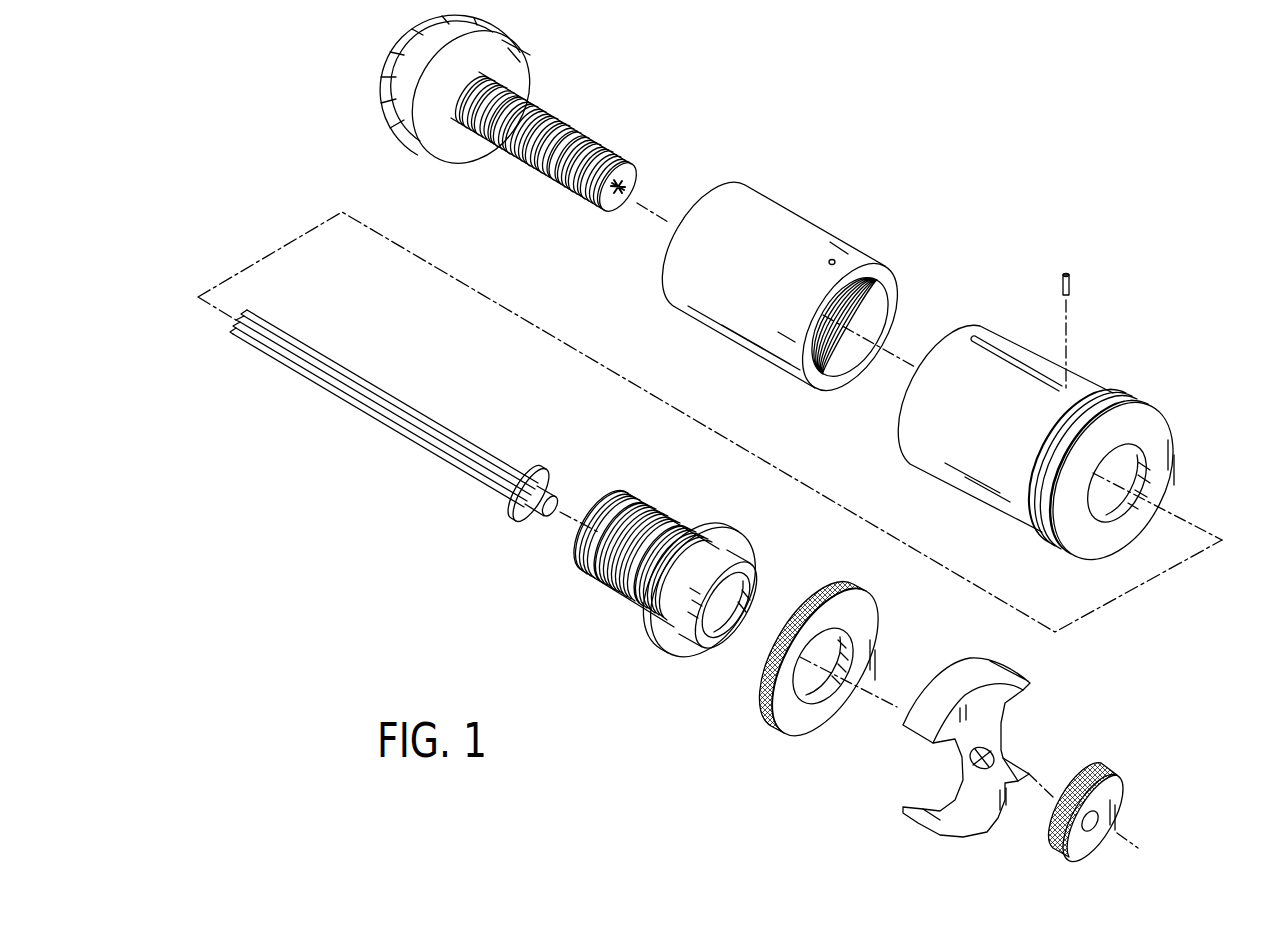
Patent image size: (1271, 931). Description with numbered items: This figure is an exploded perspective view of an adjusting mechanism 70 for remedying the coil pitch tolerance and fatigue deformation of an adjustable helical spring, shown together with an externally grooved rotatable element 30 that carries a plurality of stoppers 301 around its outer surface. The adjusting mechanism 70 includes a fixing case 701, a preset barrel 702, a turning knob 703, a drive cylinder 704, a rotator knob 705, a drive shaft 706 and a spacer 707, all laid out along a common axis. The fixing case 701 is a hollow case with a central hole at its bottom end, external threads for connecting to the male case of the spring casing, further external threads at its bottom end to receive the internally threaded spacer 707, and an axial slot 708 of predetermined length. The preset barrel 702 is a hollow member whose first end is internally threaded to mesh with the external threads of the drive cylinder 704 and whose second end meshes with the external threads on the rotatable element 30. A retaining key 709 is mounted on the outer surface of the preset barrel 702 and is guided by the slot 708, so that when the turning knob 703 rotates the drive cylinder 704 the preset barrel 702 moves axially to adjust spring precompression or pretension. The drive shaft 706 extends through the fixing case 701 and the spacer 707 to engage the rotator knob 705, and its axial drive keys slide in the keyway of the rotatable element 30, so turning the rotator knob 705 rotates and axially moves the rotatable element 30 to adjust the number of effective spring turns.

The rotatable element 30 is at (583, 140).
The stoppers 301 is at (382, 132).
The adjusting mechanism 70 is at (977, 197).
The fixing case 701 is at (1075, 380).
The preset barrel 702 is at (780, 220).
The turning knob 703 is at (797, 717).
The drive cylinder 704 is at (674, 640).
The rotator knob 705 is at (1107, 795).
The drive shaft 706 is at (432, 437).
The spacer 707 is at (1027, 698).
The axial slot 708 is at (993, 338).
The retaining key 709 is at (1067, 262).